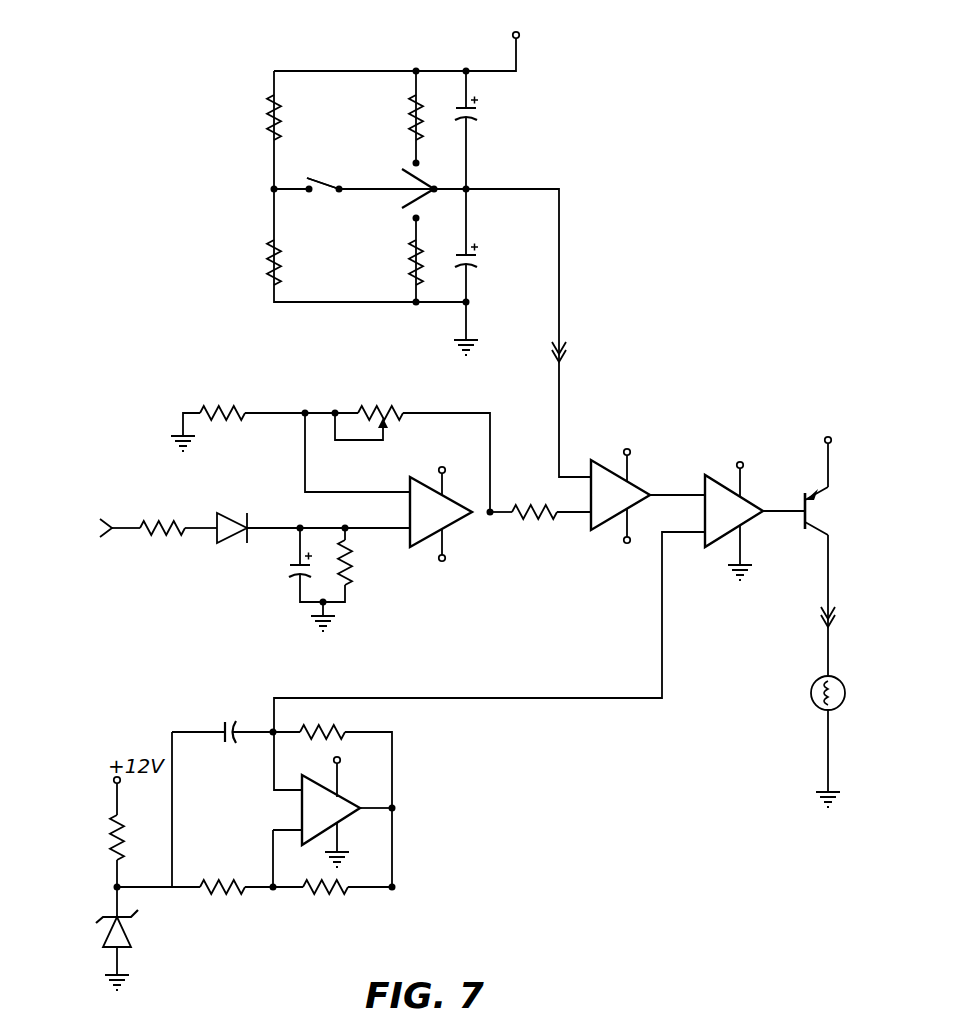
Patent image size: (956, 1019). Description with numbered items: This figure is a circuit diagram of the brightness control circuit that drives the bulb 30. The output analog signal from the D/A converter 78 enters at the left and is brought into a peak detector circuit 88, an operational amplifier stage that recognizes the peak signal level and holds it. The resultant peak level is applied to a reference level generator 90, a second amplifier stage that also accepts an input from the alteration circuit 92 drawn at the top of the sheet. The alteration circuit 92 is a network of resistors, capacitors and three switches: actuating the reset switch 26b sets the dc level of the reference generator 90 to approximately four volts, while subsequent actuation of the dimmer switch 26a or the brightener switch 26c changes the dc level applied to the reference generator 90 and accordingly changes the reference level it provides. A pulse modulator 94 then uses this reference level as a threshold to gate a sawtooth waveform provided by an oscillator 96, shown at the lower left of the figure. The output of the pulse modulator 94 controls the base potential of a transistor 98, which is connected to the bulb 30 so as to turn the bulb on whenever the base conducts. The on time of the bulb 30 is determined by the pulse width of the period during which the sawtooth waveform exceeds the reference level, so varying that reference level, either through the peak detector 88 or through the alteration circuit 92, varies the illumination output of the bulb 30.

The alteration circuit 92 is at (318, 60).
The dimmer switch 26a is at (428, 194).
The reset switch 26b is at (324, 180).
The brightener switch 26c is at (398, 178).
The D/A converter 78 is at (86, 531).
The peak detector circuit 88 is at (421, 541).
The reference level generator 90 is at (608, 472).
The pulse modulator 94 is at (722, 486).
The oscillator 96 is at (300, 810).
The transistor 98 is at (800, 526).
The bulb 30 is at (812, 694).